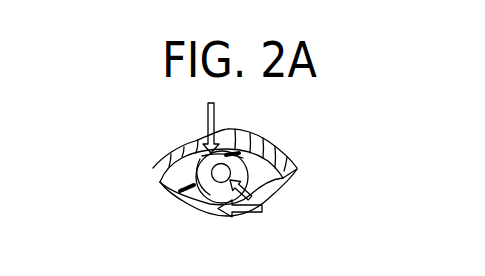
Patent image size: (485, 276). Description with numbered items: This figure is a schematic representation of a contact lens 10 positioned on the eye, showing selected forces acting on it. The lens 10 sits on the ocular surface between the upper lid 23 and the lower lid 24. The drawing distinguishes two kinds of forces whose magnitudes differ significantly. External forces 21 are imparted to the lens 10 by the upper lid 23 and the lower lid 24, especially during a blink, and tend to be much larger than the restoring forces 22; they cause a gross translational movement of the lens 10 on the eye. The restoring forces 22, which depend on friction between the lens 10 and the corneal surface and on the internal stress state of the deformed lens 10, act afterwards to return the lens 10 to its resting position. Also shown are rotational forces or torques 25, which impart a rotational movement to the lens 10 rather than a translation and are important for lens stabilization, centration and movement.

The contact lens 10 is at (178, 192).
The external forces 21 is at (214, 110).
The restoring forces 22 is at (298, 175).
The upper lid 23 is at (263, 134).
The lower lid 24 is at (274, 195).
The rotational forces or torques 25 is at (175, 158).